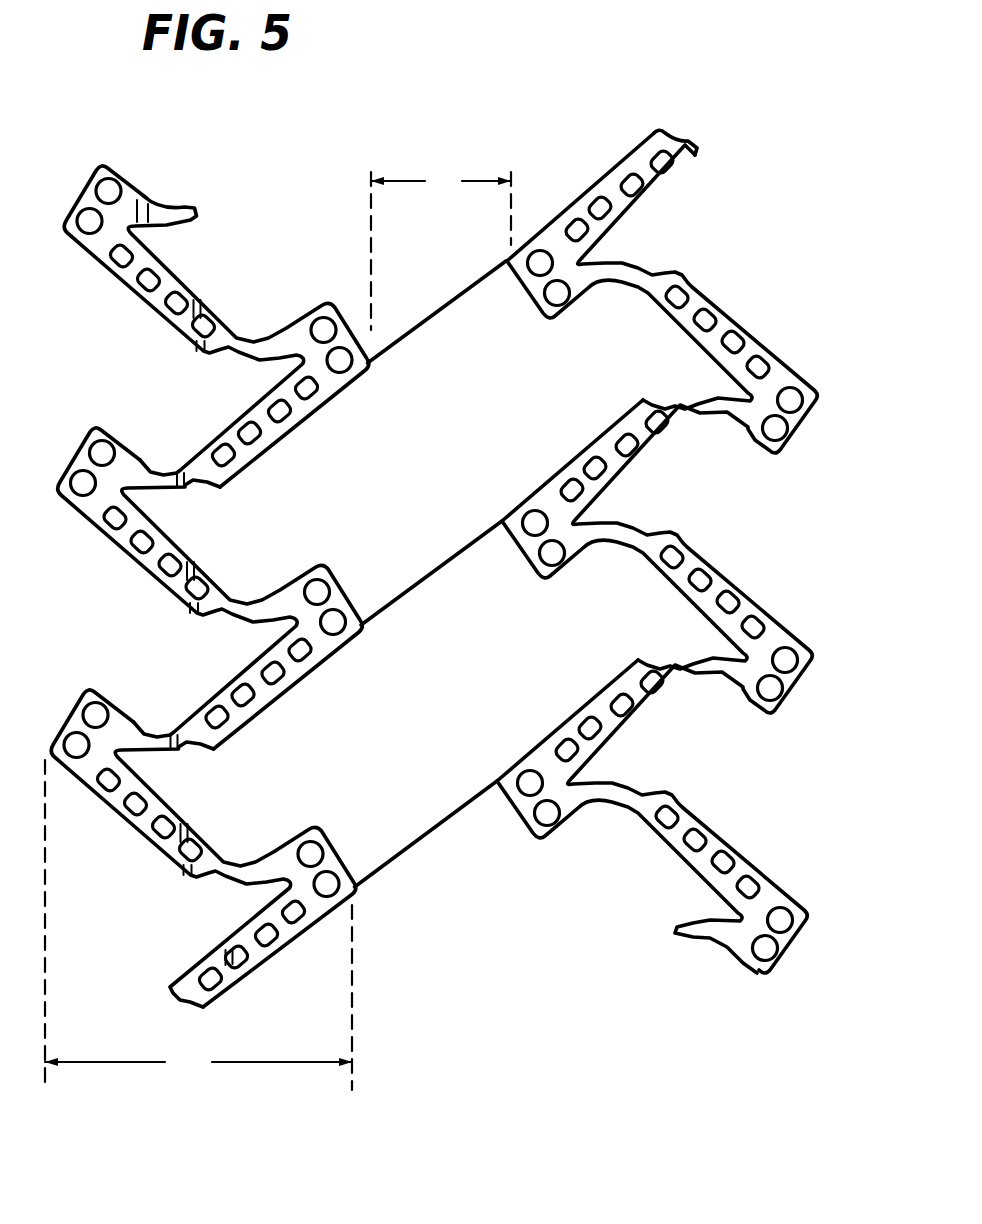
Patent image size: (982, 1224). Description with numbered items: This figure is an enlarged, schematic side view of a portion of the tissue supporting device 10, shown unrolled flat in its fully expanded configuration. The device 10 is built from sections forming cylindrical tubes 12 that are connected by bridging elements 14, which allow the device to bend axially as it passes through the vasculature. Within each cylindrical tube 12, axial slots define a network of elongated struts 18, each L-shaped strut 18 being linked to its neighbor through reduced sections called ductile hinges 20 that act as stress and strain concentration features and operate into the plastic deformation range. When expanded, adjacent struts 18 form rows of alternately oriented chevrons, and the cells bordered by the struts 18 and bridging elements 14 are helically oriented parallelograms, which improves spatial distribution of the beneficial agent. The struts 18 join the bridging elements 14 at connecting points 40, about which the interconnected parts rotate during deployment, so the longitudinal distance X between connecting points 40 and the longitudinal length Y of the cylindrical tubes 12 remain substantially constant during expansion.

The tissue supporting device 10 is at (808, 133).
The cylindrical tube 12 is at (646, 874).
The bridging element 14 is at (415, 842).
The elongated strut 18 is at (648, 457).
The ductile hinge 20 is at (251, 345).
The connecting point 40 is at (505, 790).